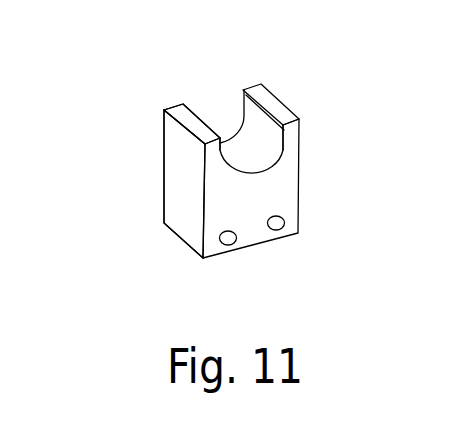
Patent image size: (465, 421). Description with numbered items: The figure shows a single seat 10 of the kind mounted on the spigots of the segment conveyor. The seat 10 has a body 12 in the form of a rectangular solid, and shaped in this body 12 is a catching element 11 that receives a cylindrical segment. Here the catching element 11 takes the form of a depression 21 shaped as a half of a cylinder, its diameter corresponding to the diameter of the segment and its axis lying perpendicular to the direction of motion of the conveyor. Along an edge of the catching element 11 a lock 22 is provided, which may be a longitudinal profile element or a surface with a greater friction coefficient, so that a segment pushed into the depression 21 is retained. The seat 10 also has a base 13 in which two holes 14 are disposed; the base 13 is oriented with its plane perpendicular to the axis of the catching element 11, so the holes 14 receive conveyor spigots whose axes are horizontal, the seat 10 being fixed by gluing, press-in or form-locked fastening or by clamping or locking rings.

The seat 10 is at (312, 180).
The catching element 11 is at (214, 106).
The body 12 is at (183, 157).
The base 13 is at (178, 210).
The holes 14 is at (276, 224).
The depression 21 is at (248, 168).
The lock 22 is at (254, 90).